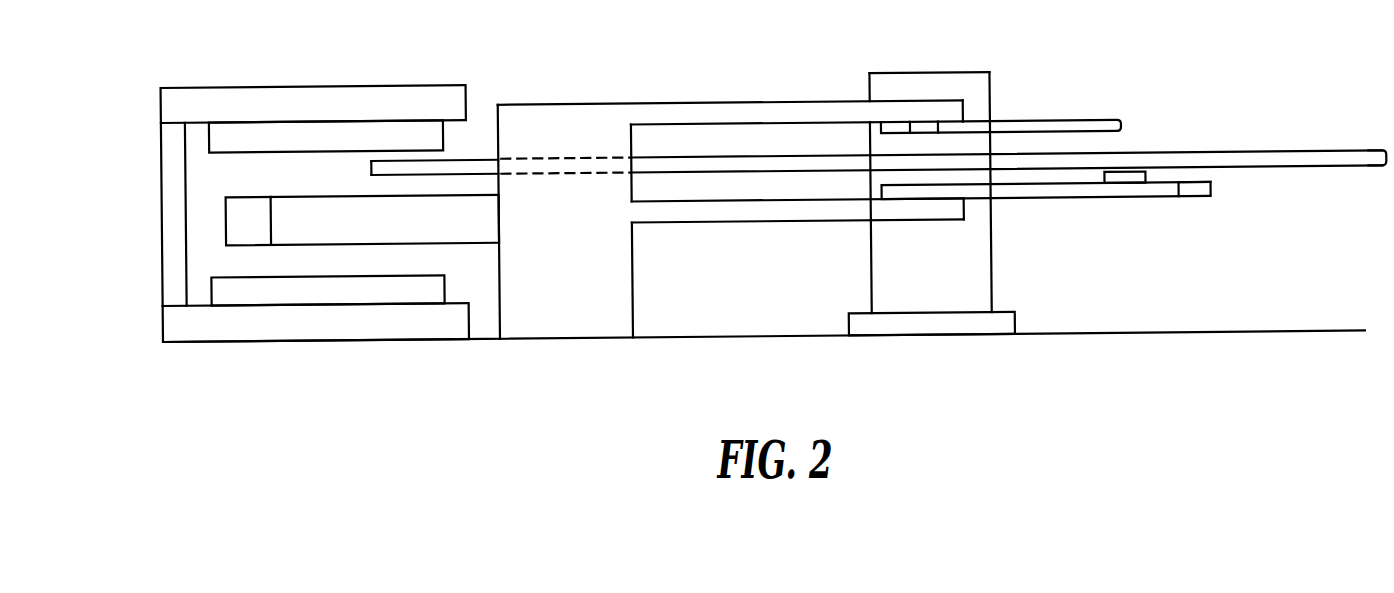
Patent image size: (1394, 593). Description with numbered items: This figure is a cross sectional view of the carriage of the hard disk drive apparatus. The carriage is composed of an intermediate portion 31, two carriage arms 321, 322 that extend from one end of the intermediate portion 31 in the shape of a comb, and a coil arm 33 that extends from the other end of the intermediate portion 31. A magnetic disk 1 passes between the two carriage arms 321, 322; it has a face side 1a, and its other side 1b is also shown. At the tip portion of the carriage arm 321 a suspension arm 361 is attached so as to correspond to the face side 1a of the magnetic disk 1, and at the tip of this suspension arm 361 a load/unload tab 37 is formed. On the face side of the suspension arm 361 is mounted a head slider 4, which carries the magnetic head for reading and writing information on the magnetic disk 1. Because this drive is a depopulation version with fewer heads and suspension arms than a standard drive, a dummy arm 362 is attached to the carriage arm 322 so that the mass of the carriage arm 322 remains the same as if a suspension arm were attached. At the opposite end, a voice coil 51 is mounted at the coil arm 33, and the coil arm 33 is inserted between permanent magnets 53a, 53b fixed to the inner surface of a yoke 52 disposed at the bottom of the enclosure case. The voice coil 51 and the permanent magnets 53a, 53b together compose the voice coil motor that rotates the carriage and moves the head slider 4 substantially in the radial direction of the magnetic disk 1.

The magnetic disk 1 is at (1299, 159).
The face side 1a is at (1374, 180).
The shaft upper end portion 1b is at (1374, 159).
The head slider 4 is at (1129, 186).
The intermediate portion 31 is at (555, 108).
The coil arm 33 is at (339, 234).
The load/unload tab 37 is at (1200, 200).
The voice coil 51 is at (299, 219).
The yoke 52 is at (249, 96).
The permanent magnet 53a is at (425, 298).
The permanent magnet 53b is at (414, 129).
The carriage arm 321 is at (744, 221).
The carriage arm 322 is at (742, 113).
The suspension arm 361 is at (1051, 209).
The dummy arm 362 is at (1052, 127).